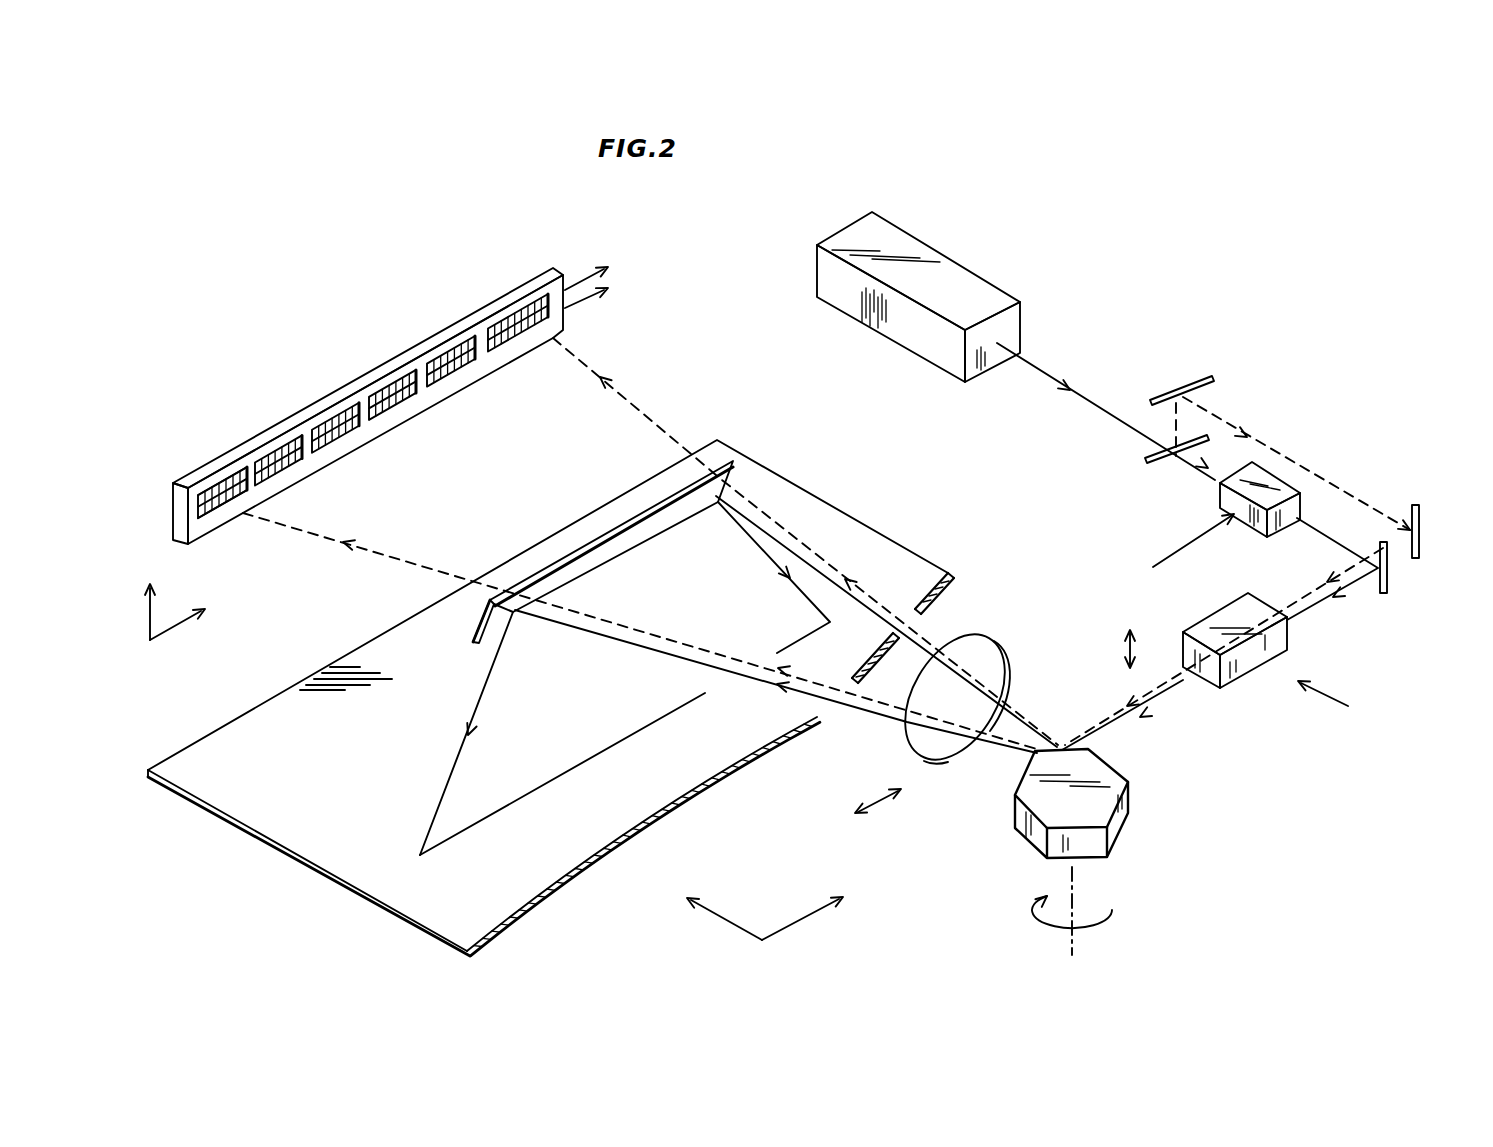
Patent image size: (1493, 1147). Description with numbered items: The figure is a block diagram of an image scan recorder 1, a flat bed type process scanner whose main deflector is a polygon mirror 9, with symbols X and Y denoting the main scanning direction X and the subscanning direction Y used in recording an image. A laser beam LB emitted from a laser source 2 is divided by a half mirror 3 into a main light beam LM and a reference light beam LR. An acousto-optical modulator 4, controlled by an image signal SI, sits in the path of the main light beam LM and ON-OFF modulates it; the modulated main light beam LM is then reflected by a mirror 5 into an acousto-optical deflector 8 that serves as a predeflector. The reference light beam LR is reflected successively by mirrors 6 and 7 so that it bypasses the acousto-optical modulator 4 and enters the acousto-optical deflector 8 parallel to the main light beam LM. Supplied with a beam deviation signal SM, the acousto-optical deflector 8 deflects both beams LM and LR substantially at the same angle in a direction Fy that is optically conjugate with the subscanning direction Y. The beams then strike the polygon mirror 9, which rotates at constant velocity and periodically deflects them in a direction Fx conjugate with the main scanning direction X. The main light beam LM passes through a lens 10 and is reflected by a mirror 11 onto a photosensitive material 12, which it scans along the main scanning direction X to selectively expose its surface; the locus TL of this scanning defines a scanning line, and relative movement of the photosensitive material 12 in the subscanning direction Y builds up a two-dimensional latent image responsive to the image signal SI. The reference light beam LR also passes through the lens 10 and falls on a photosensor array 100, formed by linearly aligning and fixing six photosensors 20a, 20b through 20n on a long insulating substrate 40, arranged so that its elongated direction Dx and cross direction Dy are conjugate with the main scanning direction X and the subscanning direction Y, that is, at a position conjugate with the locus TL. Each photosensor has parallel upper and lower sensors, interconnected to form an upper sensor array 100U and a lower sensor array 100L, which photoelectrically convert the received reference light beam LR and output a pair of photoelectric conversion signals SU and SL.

The image scan recorder 1 is at (1331, 330).
The laser source 2 is at (915, 233).
The half mirror 3 is at (1150, 457).
The acousto-optical modulator 4 is at (1253, 525).
The mirror 5 is at (1390, 592).
The mirror 6 is at (1193, 382).
The mirror 7 is at (1420, 508).
The acousto-optical deflector 8 is at (1225, 689).
The polygon mirror 9 is at (1128, 806).
The lens 10 is at (988, 637).
The mirror 11 is at (608, 530).
The photosensitive material 12 is at (302, 772).
The photosensor array 100 is at (423, 338).
The insulating substrate 40 is at (356, 378).
The photosensor 20a is at (240, 484).
The photosensor 20b is at (287, 437).
The photosensor 20n is at (513, 316).
The upper sensor array 100U is at (191, 497).
The lower sensor array 100L is at (192, 513).
The laser beam LB is at (1187, 546).
The main light beam LM is at (490, 676).
The reference light beam LR is at (418, 565).
The image signal SI is at (1174, 549).
The beam deviation signal SM is at (1343, 702).
The photoelectric conversion signal SU is at (608, 265).
The photoelectric conversion signal SL is at (606, 291).
The locus TL is at (548, 785).
The direction Fx is at (877, 800).
The direction Fy is at (1117, 649).
The elongated direction Dx is at (188, 613).
The cross direction Dy is at (148, 599).
The main scanning direction X is at (813, 908).
The subscanning direction Y is at (713, 907).